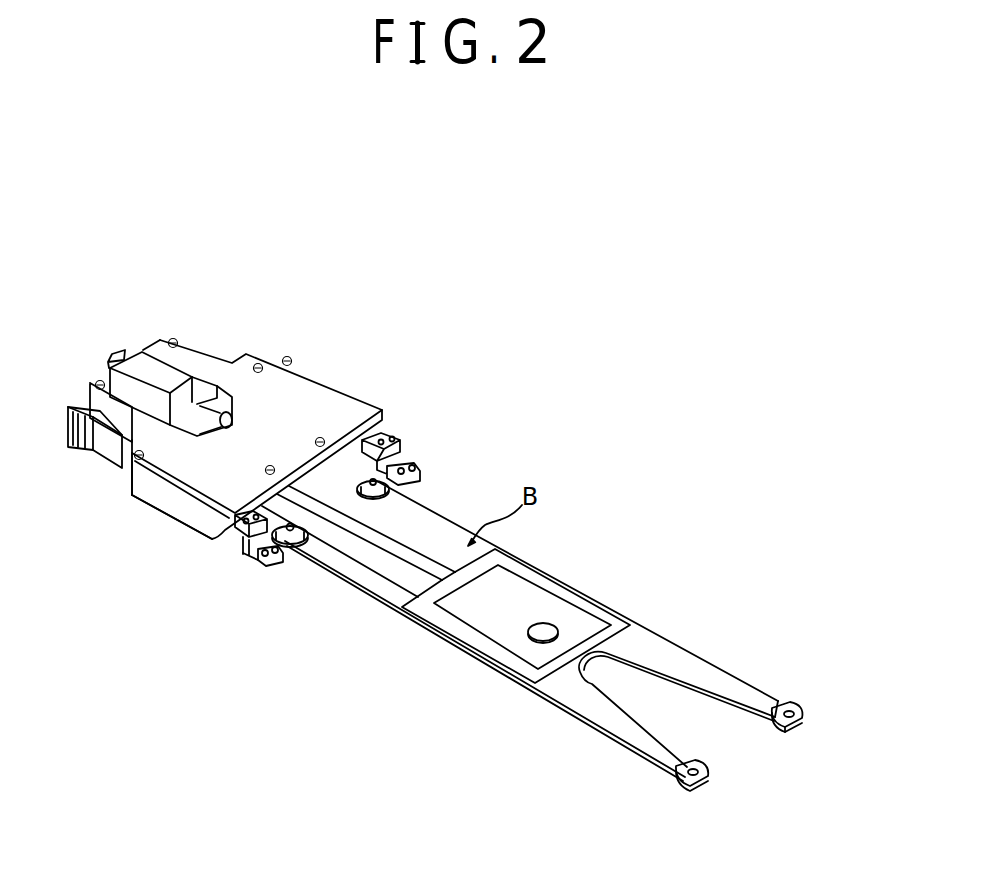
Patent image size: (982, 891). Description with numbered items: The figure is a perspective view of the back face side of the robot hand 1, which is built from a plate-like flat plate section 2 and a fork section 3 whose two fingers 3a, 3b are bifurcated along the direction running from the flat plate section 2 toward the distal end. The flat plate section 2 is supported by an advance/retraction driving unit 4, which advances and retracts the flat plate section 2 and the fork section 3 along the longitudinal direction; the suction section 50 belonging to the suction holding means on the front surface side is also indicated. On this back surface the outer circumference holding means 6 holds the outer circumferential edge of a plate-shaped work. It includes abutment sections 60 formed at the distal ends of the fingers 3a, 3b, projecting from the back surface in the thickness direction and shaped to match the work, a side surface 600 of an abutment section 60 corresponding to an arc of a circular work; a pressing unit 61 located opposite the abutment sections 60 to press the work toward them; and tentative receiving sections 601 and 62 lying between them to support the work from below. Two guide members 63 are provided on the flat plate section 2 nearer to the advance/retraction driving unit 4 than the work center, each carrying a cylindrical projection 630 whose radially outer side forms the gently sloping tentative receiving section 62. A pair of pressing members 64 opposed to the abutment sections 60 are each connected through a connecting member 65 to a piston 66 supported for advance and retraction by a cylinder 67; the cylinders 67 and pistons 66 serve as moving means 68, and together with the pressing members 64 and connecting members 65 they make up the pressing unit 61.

The robot hand 1 is at (279, 346).
The flat plate section 2 is at (454, 502).
The fork section 3 is at (712, 650).
The finger 3a is at (657, 643).
The finger 3b is at (620, 728).
The advance/retraction driving unit 4 is at (318, 361).
The outer circumference holding means 6 is at (443, 372).
The suction section 50 is at (543, 585).
The abutment section 60 is at (797, 729).
The pressing unit 61 is at (186, 612).
The tentative receiving section 62 is at (386, 496).
The guide member 63 is at (369, 504).
The pressing member 64 is at (414, 468).
The connecting member 65 is at (250, 556).
The piston 66 is at (380, 434).
The cylinder 67 is at (158, 502).
The moving means 68 is at (83, 528).
The side surface 600 is at (708, 767).
The tentative receiving section 601 is at (778, 703).
The projection 630 is at (371, 480).